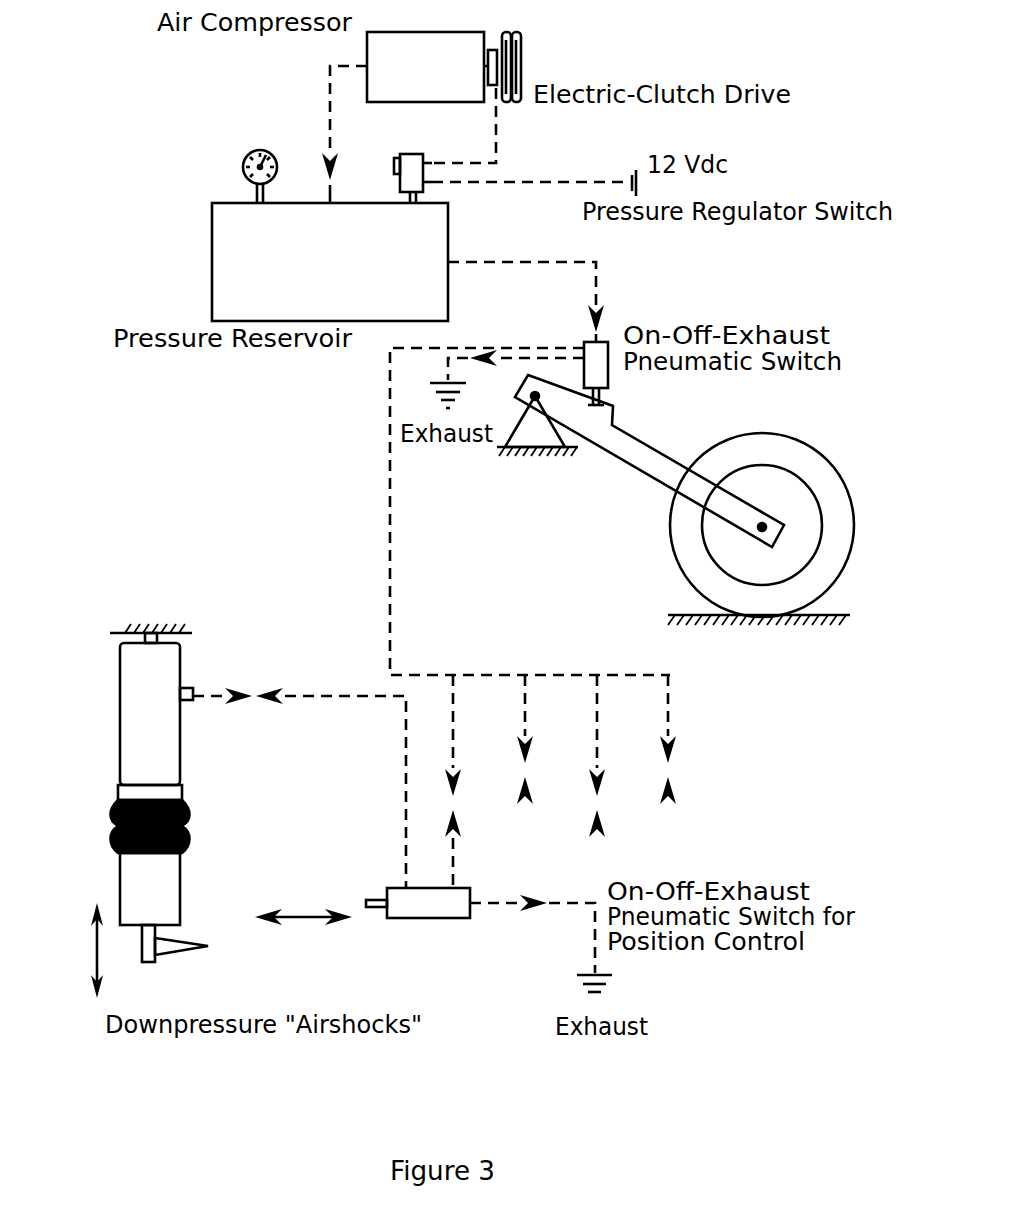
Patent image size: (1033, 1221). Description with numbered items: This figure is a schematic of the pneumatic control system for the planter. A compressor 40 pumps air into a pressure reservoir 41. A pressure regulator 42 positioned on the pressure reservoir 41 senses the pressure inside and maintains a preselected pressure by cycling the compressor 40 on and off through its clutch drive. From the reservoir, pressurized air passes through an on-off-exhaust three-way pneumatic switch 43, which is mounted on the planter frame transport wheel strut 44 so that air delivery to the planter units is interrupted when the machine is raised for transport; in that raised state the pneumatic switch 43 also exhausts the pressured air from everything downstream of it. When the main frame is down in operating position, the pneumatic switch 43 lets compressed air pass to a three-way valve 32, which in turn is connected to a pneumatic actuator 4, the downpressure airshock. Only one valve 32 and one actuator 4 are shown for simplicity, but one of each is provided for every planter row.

The pneumatic actuator 4 is at (180, 678).
The 3-way valve 32 is at (420, 918).
The compressor 40 is at (477, 32).
The pressure reservoir 41 is at (212, 269).
The pressure regulator 42 is at (410, 154).
The on-off-exhaust 3-way pneumatic switch 43 is at (608, 386).
The planter frame transport wheel strut 44 is at (648, 475).